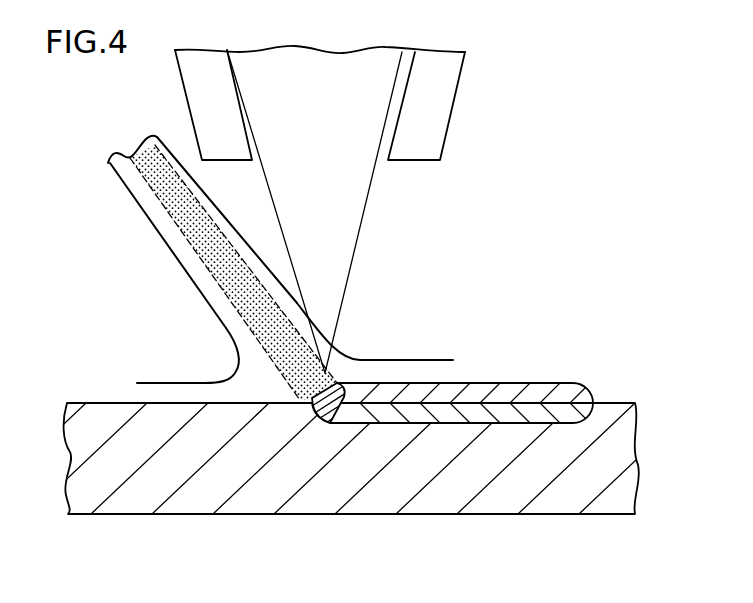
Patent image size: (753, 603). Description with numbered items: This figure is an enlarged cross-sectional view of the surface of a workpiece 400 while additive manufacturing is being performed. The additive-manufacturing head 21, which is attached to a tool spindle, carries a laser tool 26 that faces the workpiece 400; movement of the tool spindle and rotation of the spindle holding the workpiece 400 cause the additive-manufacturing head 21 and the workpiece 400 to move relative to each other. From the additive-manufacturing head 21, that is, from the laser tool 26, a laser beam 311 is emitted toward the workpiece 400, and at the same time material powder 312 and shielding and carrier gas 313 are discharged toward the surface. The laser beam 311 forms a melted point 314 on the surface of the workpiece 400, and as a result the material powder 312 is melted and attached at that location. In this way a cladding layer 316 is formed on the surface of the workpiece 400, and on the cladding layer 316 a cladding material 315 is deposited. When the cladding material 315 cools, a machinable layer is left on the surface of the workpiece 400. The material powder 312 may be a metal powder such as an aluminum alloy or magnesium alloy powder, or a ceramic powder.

The laser tool 26 is at (207, 97).
The additive-manufacturing head 21 is at (472, 115).
The laser beam 311 is at (343, 213).
The material powder 312 is at (197, 259).
The shielding and carrier gas 313 is at (195, 380).
The melted point 314 is at (357, 357).
The cladding material 315 is at (530, 395).
The cladding layer 316 is at (560, 412).
The workpiece 400 is at (515, 480).